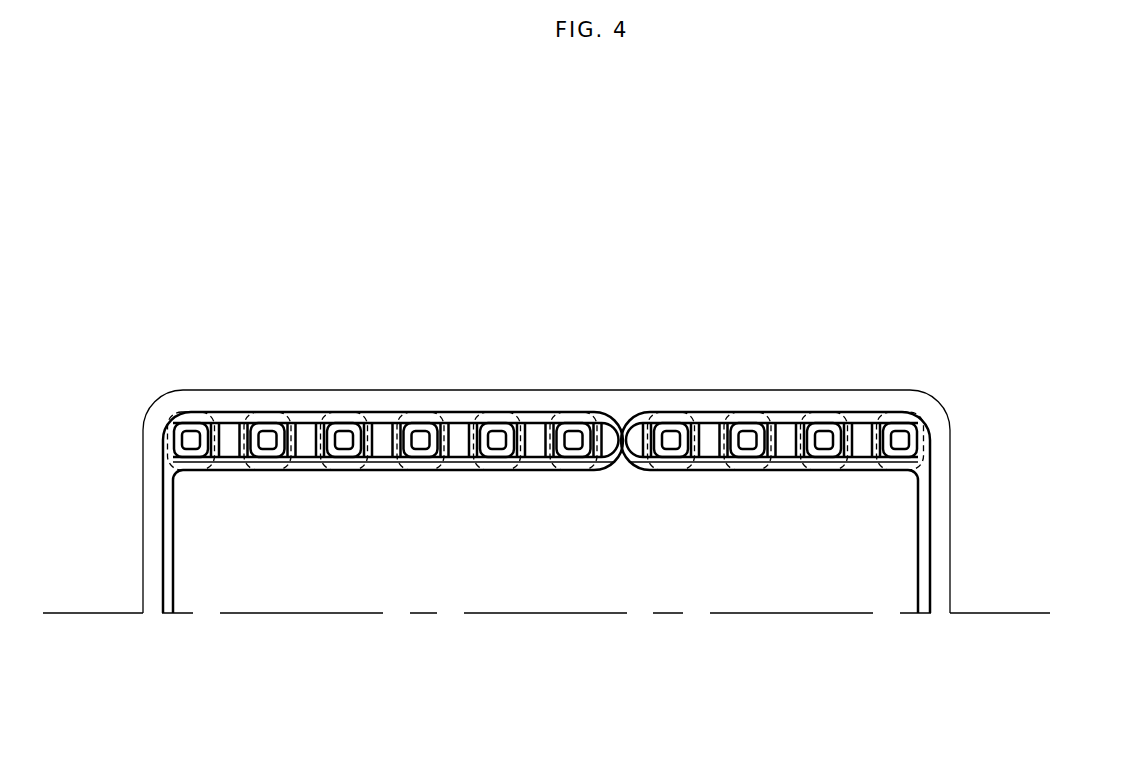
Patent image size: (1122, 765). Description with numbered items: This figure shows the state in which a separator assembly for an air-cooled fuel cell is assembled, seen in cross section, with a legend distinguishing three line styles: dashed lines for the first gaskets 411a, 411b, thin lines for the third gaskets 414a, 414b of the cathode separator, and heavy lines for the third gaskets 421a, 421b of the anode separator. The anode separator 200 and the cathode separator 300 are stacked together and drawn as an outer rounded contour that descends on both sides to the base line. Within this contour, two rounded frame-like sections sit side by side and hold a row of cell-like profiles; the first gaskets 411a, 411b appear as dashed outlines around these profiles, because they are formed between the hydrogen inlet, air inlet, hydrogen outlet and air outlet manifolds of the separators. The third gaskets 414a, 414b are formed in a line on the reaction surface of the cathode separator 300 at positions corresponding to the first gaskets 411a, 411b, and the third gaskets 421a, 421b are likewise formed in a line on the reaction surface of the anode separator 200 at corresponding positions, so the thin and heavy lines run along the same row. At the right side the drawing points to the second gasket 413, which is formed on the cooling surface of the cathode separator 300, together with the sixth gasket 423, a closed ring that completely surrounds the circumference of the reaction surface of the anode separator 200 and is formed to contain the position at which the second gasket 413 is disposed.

The anode separator 200 is at (616, 501).
The cathode separator 300 is at (950, 468).
The second gasket 413 is at (1005, 526).
The sixth gasket 423 is at (925, 544).
The first gasket 411a is at (372, 420).
The first gasket 411b is at (706, 440).
The third gasket 414a is at (789, 470).
The third gasket 414b is at (709, 440).
The third gasket 421a is at (383, 470).
The third gasket 421b is at (713, 440).